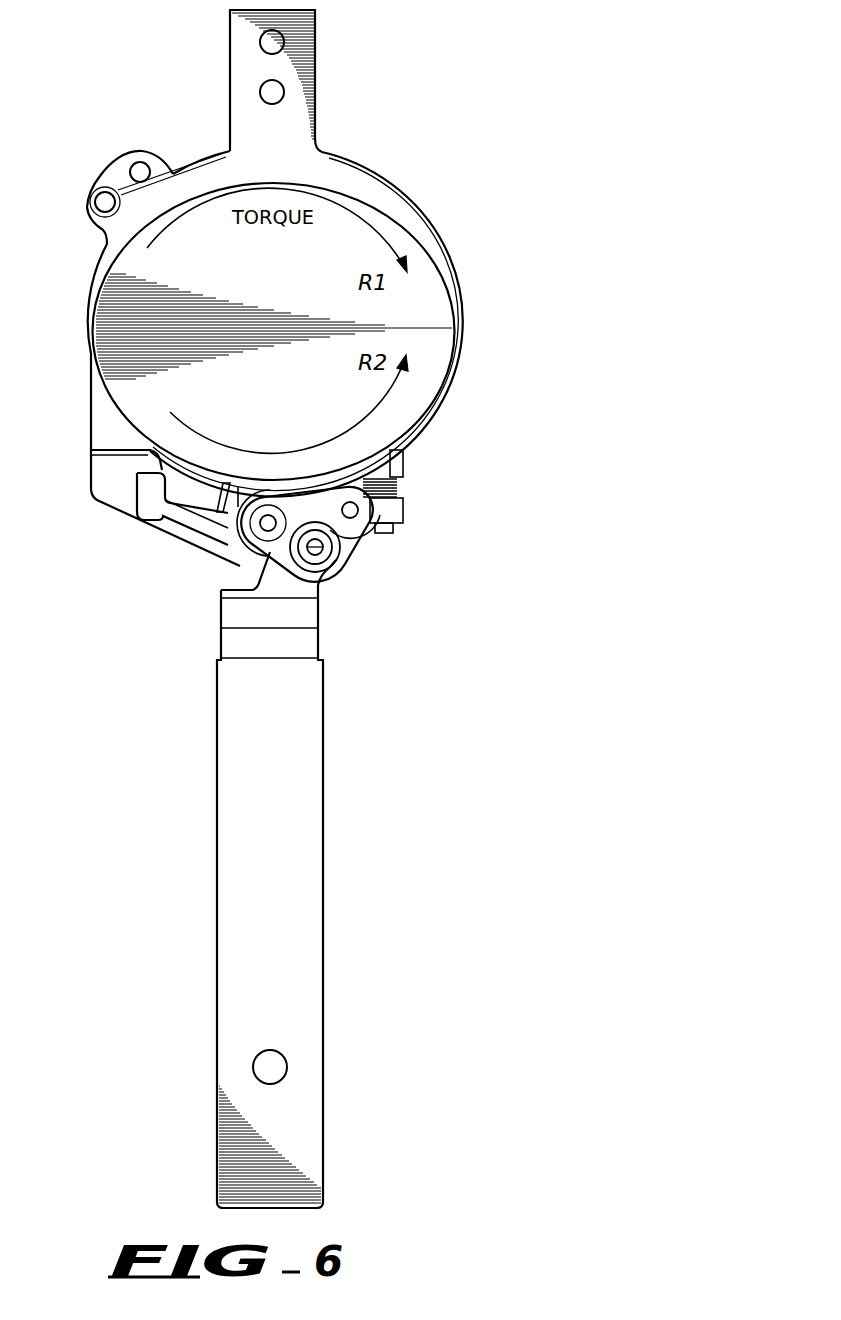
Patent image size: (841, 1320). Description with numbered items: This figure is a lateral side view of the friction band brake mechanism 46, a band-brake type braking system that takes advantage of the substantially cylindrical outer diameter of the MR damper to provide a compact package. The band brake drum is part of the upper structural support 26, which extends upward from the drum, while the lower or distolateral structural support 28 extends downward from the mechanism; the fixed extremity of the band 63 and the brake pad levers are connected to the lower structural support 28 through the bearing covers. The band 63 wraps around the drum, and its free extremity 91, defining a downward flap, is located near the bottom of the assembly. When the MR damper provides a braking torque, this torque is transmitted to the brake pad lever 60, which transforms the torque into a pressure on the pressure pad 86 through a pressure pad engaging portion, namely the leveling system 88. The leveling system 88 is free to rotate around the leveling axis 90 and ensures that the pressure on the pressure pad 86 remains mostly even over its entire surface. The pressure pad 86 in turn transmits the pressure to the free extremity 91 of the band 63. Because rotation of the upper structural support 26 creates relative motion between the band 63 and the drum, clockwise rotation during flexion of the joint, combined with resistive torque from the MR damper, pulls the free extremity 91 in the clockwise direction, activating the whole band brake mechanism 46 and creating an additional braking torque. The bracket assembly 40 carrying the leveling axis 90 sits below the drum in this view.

The upper structural support 26 is at (302, 120).
The lower or distolateral structural support 28 is at (305, 1162).
The bracket assembly 40 is at (398, 553).
The friction band brake mechanism 46 is at (432, 180).
The brake pad lever 60 is at (115, 485).
The band 63 is at (460, 262).
The pressure pad 86 is at (228, 518).
The leveling system 88 is at (280, 540).
The leveling axis 90 is at (330, 549).
The free extremity 91 is at (221, 513).